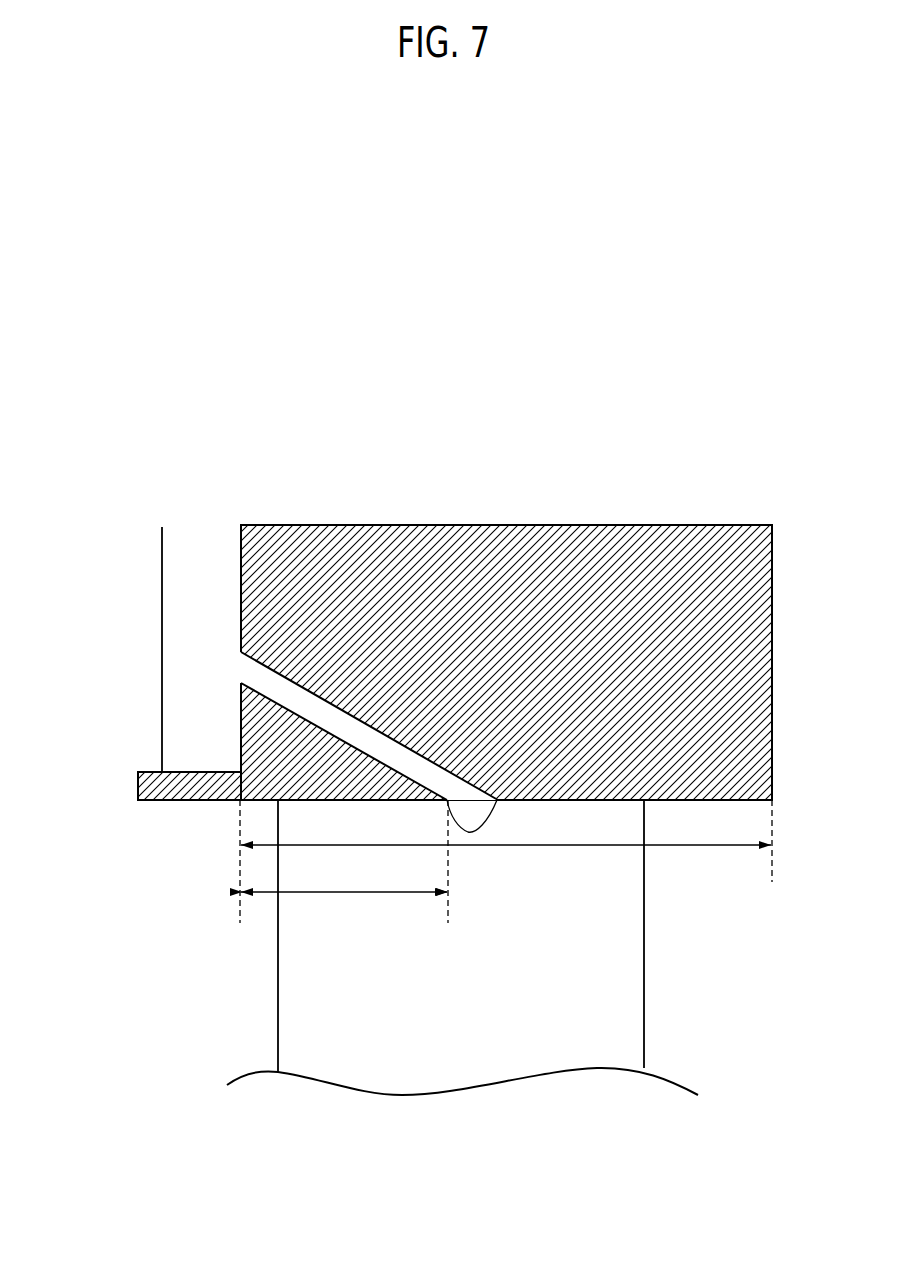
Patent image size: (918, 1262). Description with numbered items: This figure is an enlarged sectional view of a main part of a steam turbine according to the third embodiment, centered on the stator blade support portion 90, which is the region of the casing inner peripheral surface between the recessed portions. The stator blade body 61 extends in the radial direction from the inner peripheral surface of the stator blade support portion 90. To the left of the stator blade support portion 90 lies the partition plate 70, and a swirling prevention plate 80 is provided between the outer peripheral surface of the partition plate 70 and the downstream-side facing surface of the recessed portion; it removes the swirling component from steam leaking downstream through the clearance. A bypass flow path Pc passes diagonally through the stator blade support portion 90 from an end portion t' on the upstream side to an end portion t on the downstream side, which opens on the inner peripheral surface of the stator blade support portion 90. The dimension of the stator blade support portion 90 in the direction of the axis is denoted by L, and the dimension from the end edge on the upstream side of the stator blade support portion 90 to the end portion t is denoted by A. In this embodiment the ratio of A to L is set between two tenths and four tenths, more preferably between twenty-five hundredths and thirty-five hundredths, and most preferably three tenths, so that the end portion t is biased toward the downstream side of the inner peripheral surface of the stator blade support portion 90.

The stator blade support portion 90 is at (725, 690).
The bypass flow path Pc is at (353, 730).
The partition plate 70 is at (170, 790).
The swirling prevention plate 80 is at (195, 643).
The end portion on the upstream side of the bypass flow path t' is at (150, 705).
The end portion on the downstream side of the bypass flow path t is at (504, 630).
The stator blade body 61 is at (595, 1002).
The dimension from the upstream end edge of the stator blade support portion to the A is at (344, 869).
The dimension of the stator blade support portion in the axis direction L is at (506, 845).